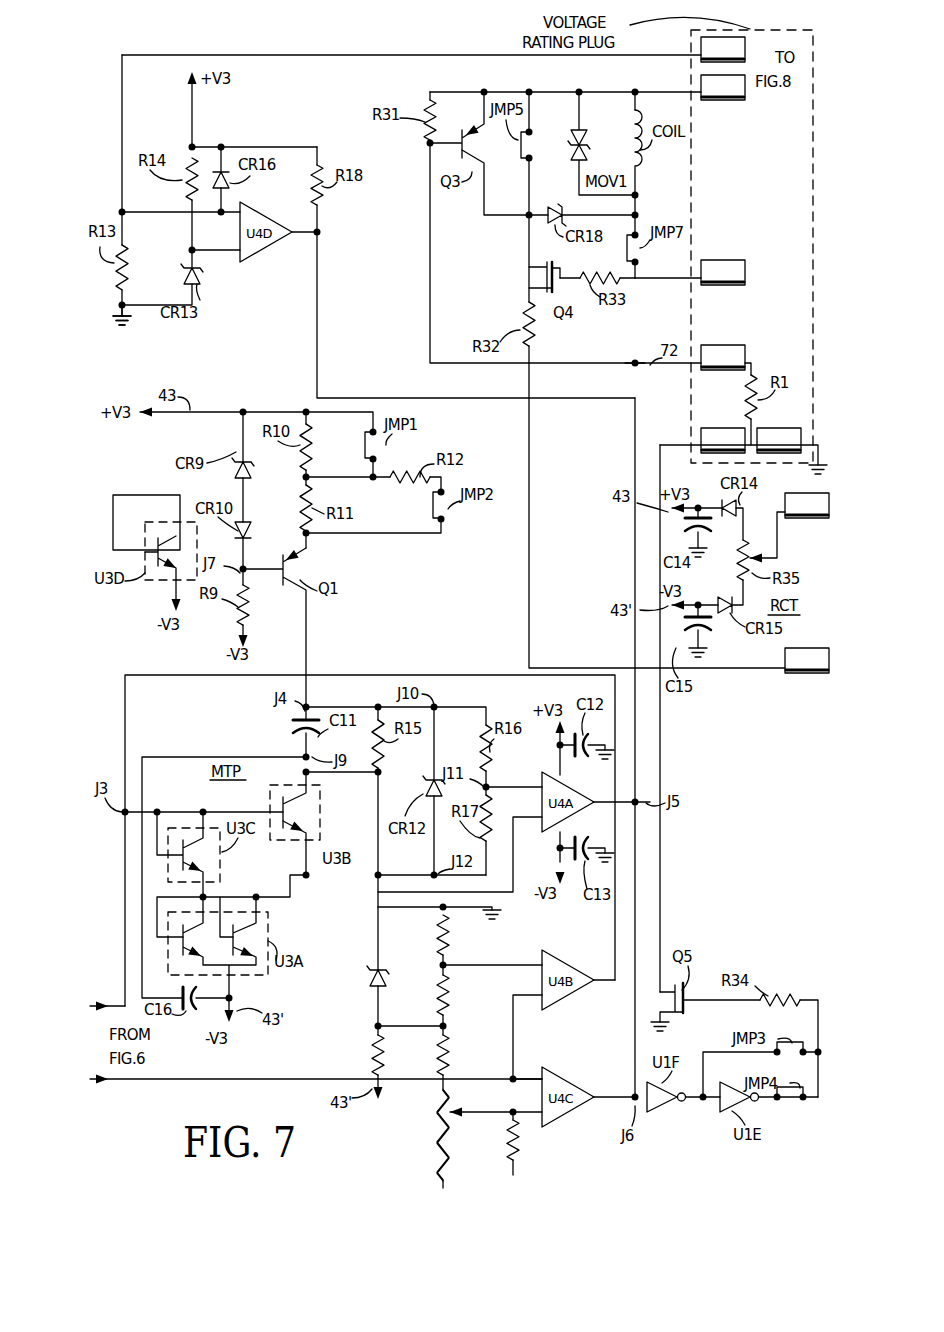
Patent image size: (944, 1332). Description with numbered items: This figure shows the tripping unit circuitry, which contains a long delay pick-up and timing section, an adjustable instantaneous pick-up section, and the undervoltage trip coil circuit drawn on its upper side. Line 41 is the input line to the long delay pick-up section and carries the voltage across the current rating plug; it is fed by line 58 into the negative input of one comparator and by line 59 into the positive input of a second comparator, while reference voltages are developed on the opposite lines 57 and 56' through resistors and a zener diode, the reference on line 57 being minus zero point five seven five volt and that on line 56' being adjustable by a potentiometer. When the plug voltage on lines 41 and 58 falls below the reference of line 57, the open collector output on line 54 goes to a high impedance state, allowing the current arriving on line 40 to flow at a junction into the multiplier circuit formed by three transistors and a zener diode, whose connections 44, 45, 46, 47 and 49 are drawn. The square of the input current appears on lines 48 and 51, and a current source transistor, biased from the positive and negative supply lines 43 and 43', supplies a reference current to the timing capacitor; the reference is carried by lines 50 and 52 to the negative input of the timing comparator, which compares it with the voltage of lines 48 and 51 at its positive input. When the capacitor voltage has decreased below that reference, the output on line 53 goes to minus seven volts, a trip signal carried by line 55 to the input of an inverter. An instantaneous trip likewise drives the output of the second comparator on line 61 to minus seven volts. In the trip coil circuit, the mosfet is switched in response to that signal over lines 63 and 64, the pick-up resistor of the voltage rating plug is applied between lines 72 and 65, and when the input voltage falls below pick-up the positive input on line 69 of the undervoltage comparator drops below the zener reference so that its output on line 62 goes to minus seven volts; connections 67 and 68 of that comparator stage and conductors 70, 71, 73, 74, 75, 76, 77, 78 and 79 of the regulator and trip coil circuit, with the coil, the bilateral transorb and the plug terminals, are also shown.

The line 40 is at (118, 1003).
The line 41 is at (128, 1086).
The line 43 is at (206, 109).
The line 43' is at (266, 637).
The feedback line 44 is at (227, 757).
The base line of current mirror 45 is at (233, 812).
The interconnecting line of current mirror 46 is at (203, 893).
The emitter line 47 is at (303, 866).
The line 48 is at (338, 774).
The line 49 is at (378, 872).
The line 50 is at (460, 706).
The line 51 is at (377, 888).
The line 52 is at (513, 787).
The line 53 is at (625, 791).
The line 54 is at (470, 675).
The line 55 is at (635, 1036).
The line 56' is at (496, 1104).
The line 57 is at (518, 967).
The line 58 is at (513, 1041).
The line 59 is at (523, 1078).
The line 61 is at (608, 1101).
The line 62 is at (635, 555).
The line 63 is at (703, 1105).
The line 64 is at (815, 1000).
The line 65 is at (661, 846).
The ground connection 67 is at (124, 316).
The inverting input line of amplifier U4D 68 is at (240, 251).
The line 69 is at (221, 215).
The line 70 is at (373, 55).
The line 71 is at (674, 92).
The line 72 is at (430, 343).
The node 73 is at (635, 356).
The line 74 is at (632, 107).
The line 75 is at (529, 597).
The line 76 is at (529, 235).
The line 77 is at (484, 188).
The metal oxide varistor MOV1 78 is at (583, 178).
The line 79 is at (677, 278).